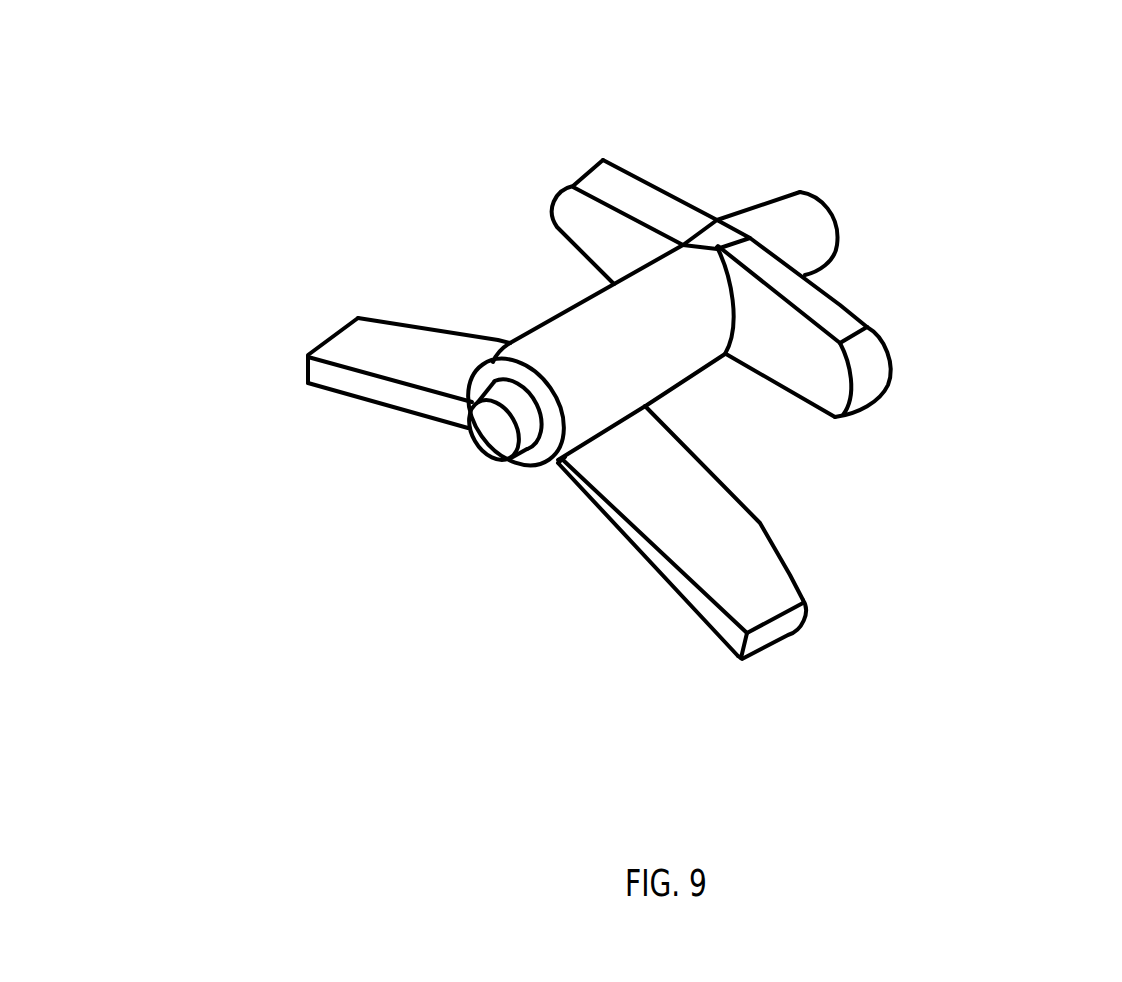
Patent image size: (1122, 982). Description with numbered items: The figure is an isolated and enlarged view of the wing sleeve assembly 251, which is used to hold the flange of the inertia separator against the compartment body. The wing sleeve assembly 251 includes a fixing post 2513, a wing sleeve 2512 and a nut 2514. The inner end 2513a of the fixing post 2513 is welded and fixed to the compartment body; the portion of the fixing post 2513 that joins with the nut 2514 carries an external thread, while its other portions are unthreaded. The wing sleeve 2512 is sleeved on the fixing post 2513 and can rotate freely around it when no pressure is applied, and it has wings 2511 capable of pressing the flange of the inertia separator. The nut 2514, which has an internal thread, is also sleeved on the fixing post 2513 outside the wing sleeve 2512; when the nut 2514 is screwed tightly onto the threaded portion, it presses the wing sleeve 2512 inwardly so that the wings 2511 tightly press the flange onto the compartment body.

The wing sleeve assembly 251 is at (315, 157).
The wings 2511 is at (720, 558).
The wing sleeve 2512 is at (583, 353).
The fixing post 2513 is at (797, 228).
The inner end 2513a is at (488, 433).
The nut 2514 is at (805, 307).